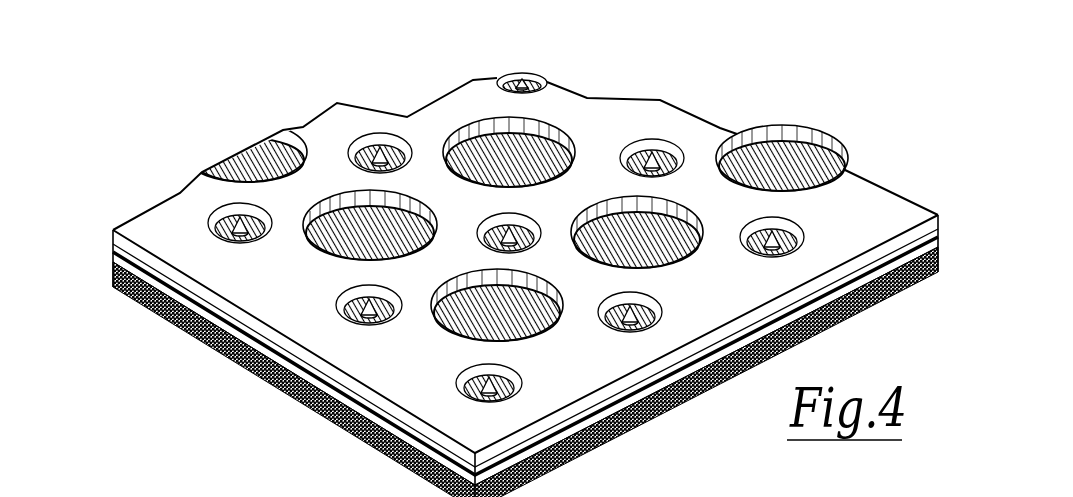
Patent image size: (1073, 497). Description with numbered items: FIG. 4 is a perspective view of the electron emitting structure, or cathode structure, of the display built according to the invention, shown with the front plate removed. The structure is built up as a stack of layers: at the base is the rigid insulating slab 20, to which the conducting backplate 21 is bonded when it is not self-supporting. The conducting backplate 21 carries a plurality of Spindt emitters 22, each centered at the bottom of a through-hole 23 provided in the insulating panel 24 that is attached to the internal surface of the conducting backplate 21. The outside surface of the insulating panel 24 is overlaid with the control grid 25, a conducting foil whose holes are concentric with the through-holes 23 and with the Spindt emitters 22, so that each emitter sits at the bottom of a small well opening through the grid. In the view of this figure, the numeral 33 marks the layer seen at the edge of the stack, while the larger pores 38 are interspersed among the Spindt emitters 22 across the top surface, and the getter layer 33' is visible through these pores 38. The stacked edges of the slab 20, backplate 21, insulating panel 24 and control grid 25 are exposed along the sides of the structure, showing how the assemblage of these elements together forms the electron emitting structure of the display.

The rigid insulating slab 20 is at (217, 348).
The conducting backplate 21 is at (475, 378).
The Spindt emitters 22 is at (650, 157).
The through-holes 23 is at (525, 126).
The insulating panel 24 is at (378, 145).
The control grid 25 is at (168, 222).
The insulating layer 33 is at (550, 372).
The getter layer 33' is at (517, 237).
The pores 38 is at (488, 147).